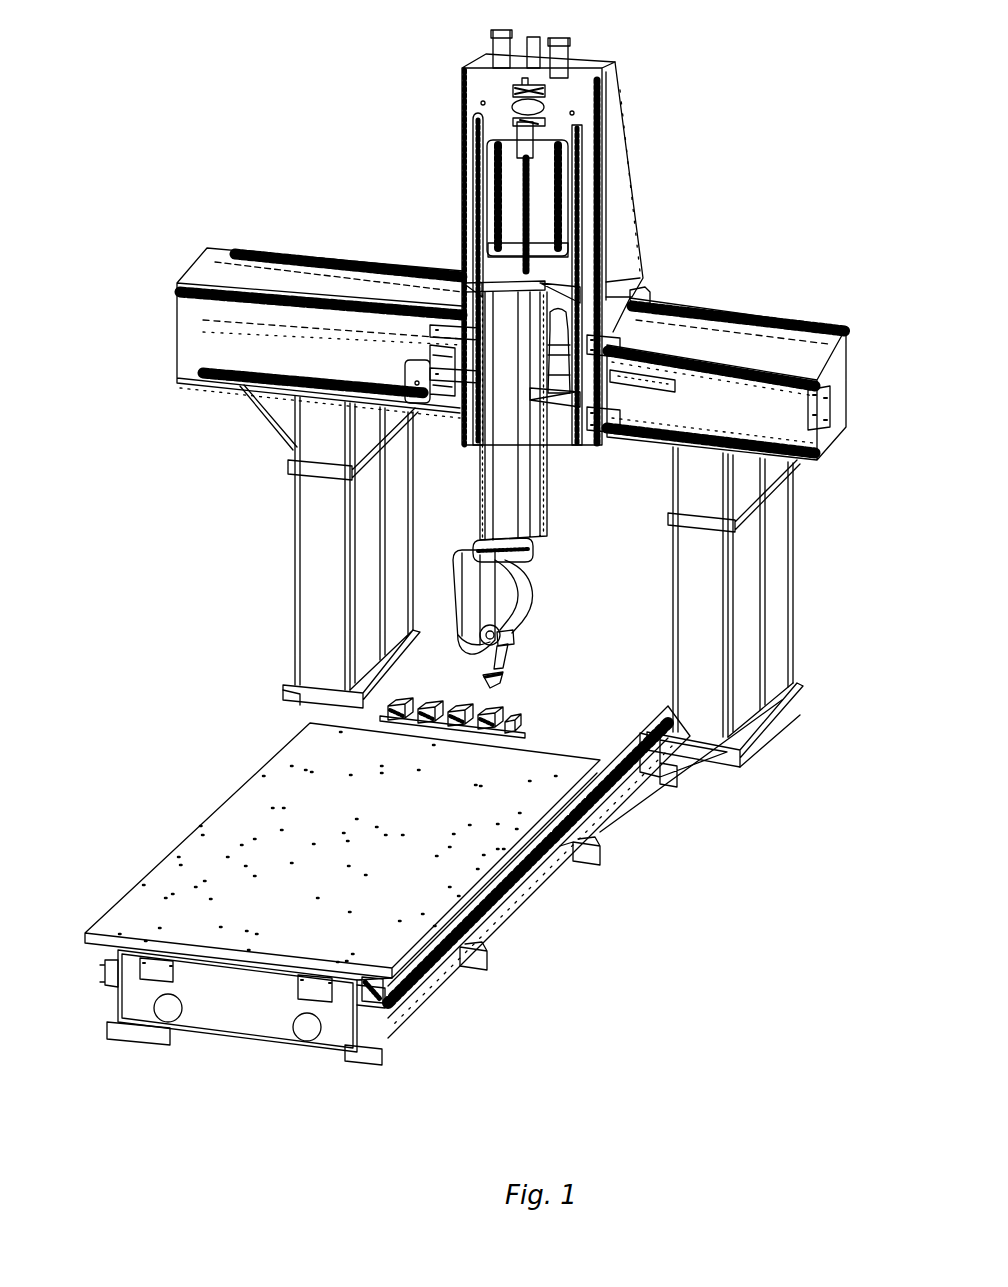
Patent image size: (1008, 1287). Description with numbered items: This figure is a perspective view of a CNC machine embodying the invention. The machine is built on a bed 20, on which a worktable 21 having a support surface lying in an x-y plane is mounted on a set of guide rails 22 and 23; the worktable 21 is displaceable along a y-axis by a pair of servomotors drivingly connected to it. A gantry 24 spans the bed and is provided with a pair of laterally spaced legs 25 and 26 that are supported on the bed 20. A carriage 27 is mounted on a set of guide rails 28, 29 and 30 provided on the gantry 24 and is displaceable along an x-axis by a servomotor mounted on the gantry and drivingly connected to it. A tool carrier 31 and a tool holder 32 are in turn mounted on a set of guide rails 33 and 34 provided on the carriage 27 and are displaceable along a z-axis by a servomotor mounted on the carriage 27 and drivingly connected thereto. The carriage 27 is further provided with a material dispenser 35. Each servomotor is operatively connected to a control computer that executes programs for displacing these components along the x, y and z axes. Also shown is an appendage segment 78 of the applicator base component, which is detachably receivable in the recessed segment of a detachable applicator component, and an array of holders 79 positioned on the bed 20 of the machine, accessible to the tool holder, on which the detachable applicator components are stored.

The bed 20 is at (605, 810).
The worktable 21 is at (220, 820).
The guide rail 22 is at (105, 962).
The guide rail 23 is at (385, 1015).
The gantry 24 is at (170, 328).
The leg 25 is at (298, 590).
The leg 26 is at (785, 603).
The carriage 27 is at (458, 215).
The guide rail 28 is at (838, 368).
The guide rail 29 is at (840, 440).
The guide rail 30 is at (705, 330).
The tool carrier 31 is at (560, 497).
The tool holder 32 is at (538, 592).
The guide rail 33 is at (473, 138).
The guide rail 34 is at (583, 145).
The material dispenser 35 is at (524, 659).
The appendage segment 78 is at (518, 706).
The holder 79 is at (415, 705).